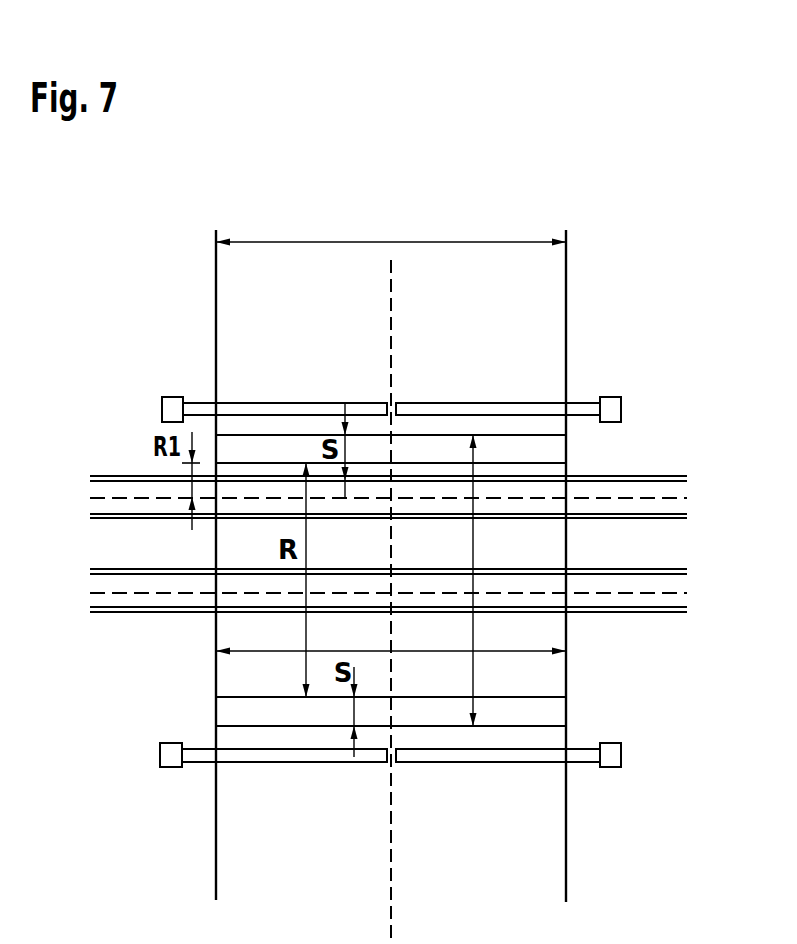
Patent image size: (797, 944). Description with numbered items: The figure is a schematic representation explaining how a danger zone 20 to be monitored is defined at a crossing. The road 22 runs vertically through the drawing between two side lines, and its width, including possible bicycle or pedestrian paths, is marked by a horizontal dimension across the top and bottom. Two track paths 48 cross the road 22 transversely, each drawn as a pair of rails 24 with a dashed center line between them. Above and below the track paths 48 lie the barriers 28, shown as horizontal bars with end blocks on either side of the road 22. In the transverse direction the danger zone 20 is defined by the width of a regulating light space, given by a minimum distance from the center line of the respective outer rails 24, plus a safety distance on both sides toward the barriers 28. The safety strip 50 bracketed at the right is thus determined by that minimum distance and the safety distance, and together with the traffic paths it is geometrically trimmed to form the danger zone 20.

The danger zone 20 is at (473, 652).
The road 22 is at (215, 862).
The rails 24 is at (100, 483).
The barriers 28 is at (258, 402).
The track paths 48 is at (662, 474).
The safety strip 50 is at (574, 435).